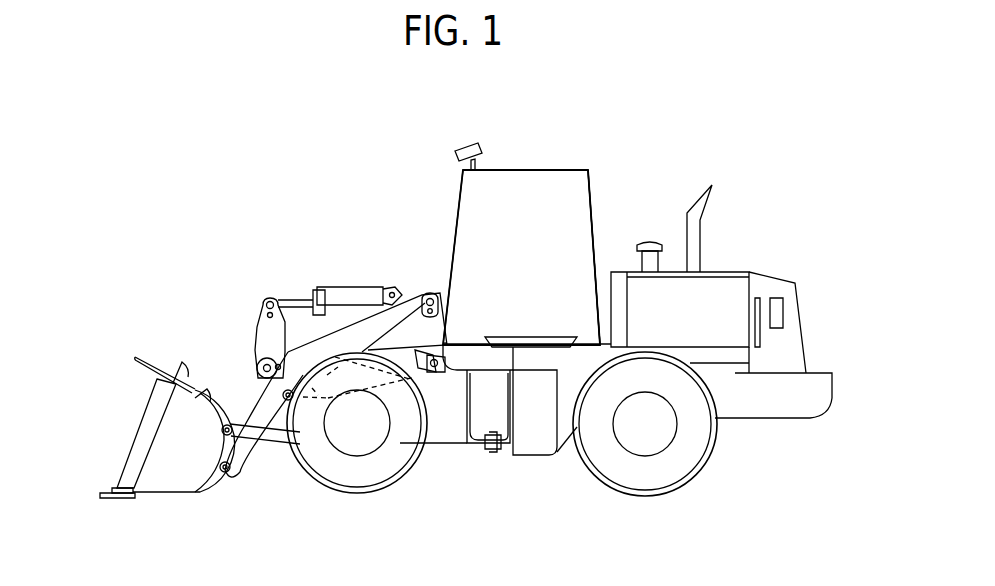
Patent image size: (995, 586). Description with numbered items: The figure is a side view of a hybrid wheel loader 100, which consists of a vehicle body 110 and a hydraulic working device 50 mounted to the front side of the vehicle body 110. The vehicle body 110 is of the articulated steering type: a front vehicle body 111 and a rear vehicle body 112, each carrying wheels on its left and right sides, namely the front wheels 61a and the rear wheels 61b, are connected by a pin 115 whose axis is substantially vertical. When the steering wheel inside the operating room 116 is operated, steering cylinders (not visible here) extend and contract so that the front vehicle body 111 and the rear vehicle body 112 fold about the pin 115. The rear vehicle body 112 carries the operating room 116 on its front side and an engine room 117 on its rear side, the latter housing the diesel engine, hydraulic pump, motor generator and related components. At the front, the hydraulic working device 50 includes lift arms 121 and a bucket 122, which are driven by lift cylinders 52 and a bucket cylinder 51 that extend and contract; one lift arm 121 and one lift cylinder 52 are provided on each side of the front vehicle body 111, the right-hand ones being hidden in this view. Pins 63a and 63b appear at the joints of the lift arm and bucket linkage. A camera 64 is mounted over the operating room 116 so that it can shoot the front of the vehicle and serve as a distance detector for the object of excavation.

The wheel loader 100 is at (762, 162).
The vehicle body 110 is at (592, 118).
The front vehicle body 111 is at (452, 305).
The rear vehicle body 112 is at (581, 320).
The pin 115 is at (493, 452).
The operating room 116 is at (597, 206).
The engine room 117 is at (776, 278).
The lift arms 121 is at (341, 332).
The bucket 122 is at (138, 440).
The hydraulic working device 50 is at (213, 348).
The bucket cylinder 51 is at (362, 288).
The lift cylinders 52 is at (330, 378).
The front wheels 61a is at (306, 474).
The rear wheels 61b is at (707, 464).
The boom pin 63a is at (430, 292).
The bucket pin 63b is at (223, 494).
The camera 64 is at (466, 146).